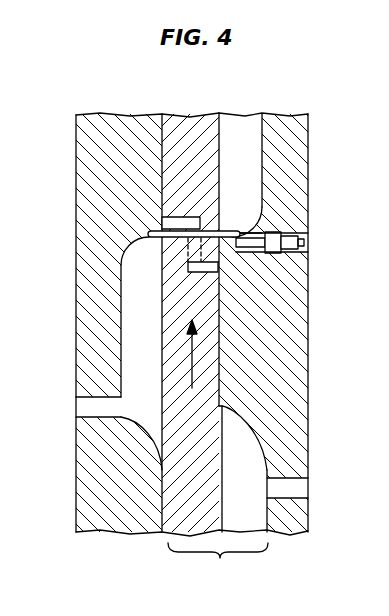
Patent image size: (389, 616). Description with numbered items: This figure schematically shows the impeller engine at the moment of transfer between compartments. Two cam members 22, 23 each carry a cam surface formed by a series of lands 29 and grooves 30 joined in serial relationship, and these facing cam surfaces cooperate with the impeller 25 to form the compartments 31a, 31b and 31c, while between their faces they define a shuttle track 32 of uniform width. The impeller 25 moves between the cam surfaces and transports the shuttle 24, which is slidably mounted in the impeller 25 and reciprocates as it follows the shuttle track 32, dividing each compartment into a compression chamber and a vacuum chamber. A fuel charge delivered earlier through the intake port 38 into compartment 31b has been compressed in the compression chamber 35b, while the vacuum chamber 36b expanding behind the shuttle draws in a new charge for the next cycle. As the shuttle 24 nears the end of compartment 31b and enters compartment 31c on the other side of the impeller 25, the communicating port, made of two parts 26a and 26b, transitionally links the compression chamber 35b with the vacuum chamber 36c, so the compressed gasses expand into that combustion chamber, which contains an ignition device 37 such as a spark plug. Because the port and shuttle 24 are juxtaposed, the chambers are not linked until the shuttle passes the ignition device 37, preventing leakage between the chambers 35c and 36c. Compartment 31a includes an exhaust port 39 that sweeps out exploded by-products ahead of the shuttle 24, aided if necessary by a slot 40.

The cam member 22 is at (95, 135).
The cam member 23 is at (300, 528).
The shuttle 24 is at (232, 225).
The impeller 25 is at (191, 130).
The communicating port part 26a is at (160, 220).
The communicating port part 26b is at (228, 297).
The land 29 is at (140, 162).
The groove 30 is at (268, 152).
The compartment 31a is at (298, 525).
The compartment 31b is at (127, 298).
The compartment 31c is at (245, 178).
The shuttle track 32 is at (218, 562).
The compression chamber 35b is at (150, 235).
The compression chamber 35c is at (255, 230).
The vacuum chamber 36b is at (132, 262).
The vacuum chamber 36c is at (225, 266).
The ignition device 37 is at (302, 245).
The intake port 38 is at (85, 406).
The exhaust port 39 is at (300, 491).
The slot 40 is at (262, 453).